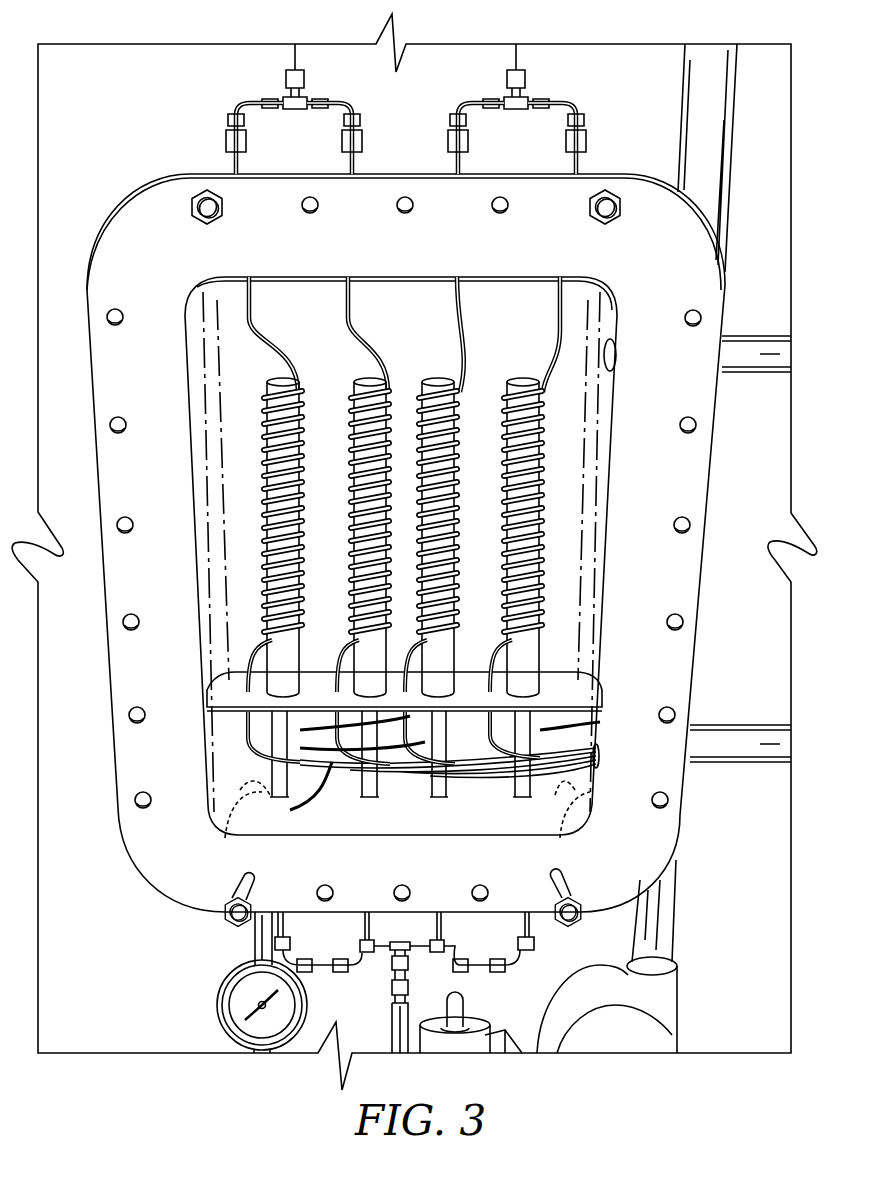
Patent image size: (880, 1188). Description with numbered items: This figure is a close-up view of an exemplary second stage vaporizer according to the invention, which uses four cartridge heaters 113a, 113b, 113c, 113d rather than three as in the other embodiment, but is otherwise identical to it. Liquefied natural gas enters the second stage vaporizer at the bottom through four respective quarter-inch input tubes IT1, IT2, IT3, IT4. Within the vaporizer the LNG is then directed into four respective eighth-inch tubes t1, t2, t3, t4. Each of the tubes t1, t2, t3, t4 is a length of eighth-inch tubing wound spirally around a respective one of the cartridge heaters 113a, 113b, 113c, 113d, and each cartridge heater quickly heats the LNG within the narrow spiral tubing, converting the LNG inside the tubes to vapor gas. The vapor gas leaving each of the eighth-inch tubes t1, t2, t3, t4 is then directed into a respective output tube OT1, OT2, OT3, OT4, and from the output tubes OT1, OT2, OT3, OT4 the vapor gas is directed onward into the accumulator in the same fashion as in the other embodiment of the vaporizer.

The output tube OT1 is at (231, 164).
The output tube OT2 is at (357, 164).
The output tube OT3 is at (455, 164).
The output tube OT4 is at (578, 164).
The tube t1 is at (243, 292).
The tube t2 is at (341, 292).
The tube t3 is at (452, 292).
The tube t4 is at (550, 292).
The cartridge heater 113a is at (259, 392).
The cartridge heater 113b is at (346, 392).
The cartridge heater 113c is at (446, 392).
The cartridge heater 113d is at (536, 392).
The input tube IT1 is at (290, 810).
The input tube IT2 is at (300, 748).
The input tube IT3 is at (300, 730).
The input tube IT4 is at (600, 722).